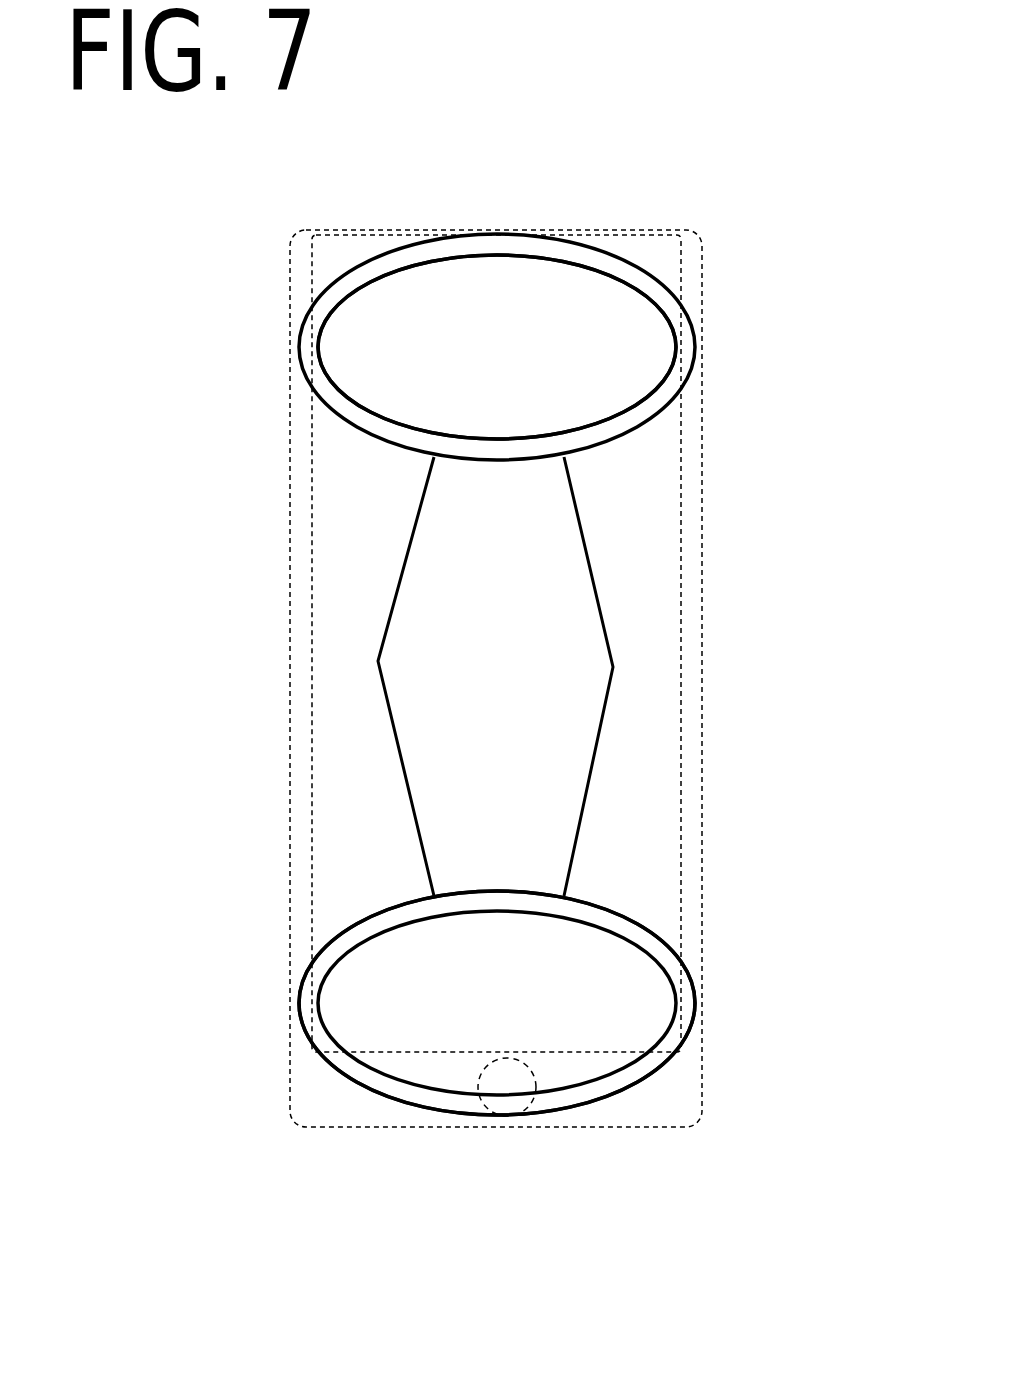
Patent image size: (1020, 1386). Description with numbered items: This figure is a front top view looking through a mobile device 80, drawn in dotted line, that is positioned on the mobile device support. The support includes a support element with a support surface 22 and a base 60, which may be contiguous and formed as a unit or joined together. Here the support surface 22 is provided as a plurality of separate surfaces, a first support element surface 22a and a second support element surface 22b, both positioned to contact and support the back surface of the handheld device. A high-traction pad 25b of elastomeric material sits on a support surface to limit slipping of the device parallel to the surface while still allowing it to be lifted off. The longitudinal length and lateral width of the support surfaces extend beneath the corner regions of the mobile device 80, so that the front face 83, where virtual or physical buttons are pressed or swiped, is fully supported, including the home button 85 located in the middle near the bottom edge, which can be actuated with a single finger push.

The support surface 22 is at (360, 267).
The first support element surface 22a is at (377, 1093).
The second support element surface 22b is at (592, 282).
The high-traction pad 25b is at (530, 258).
The base 60 is at (575, 692).
The mobile device 80 is at (287, 544).
The front face 83 is at (310, 622).
The home button 85 is at (517, 1103).